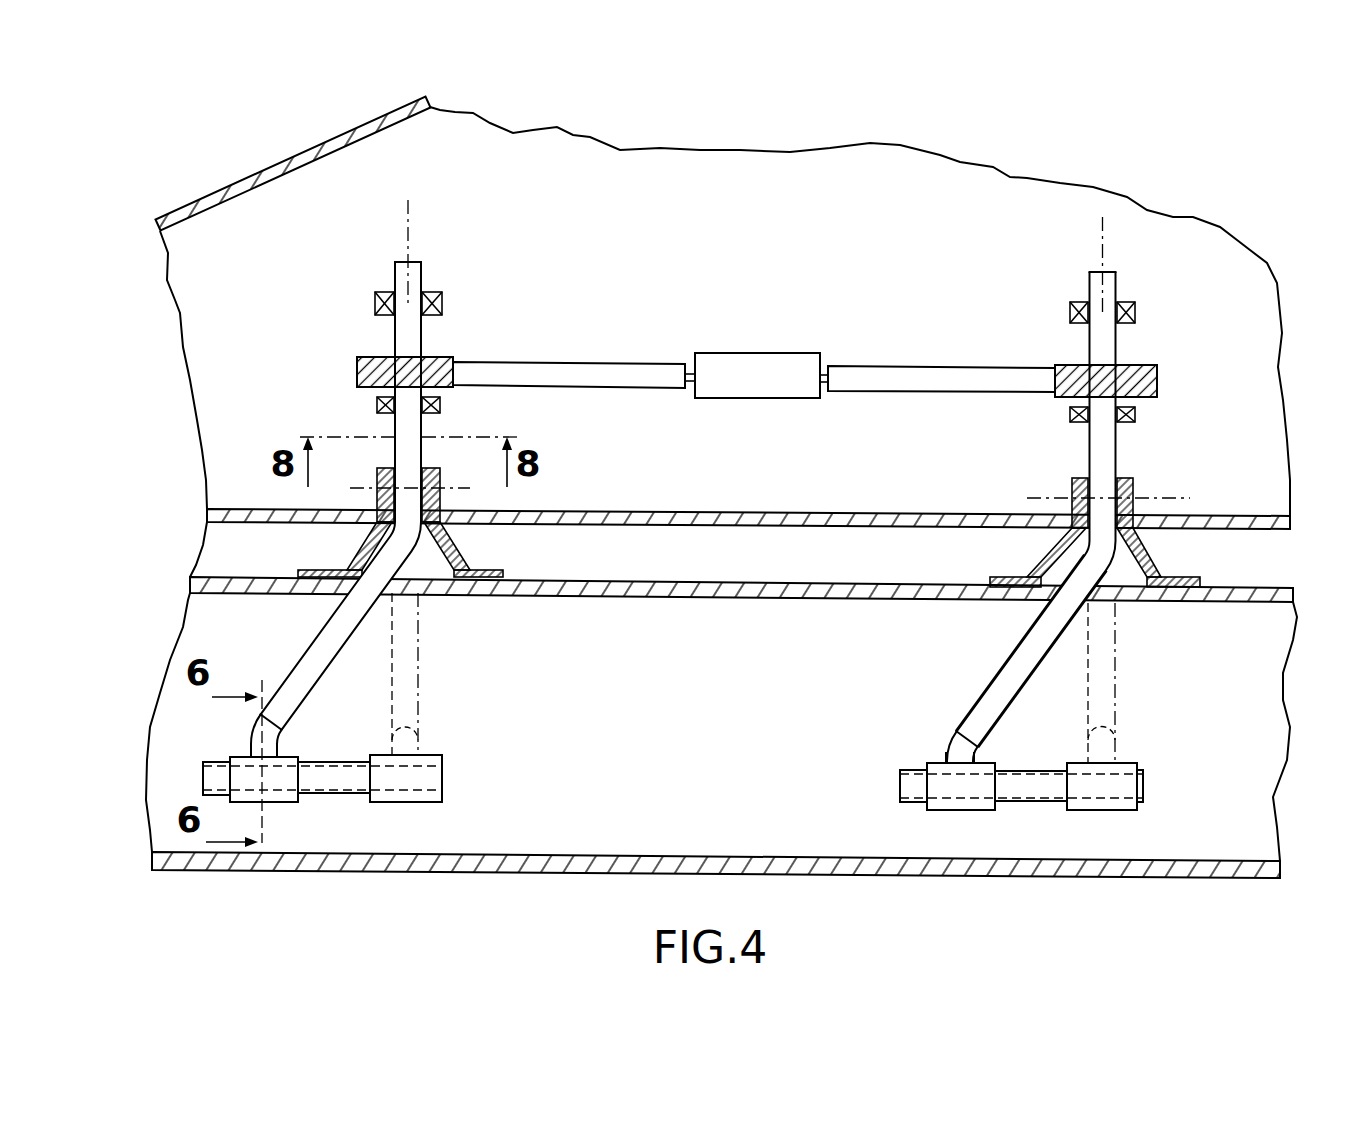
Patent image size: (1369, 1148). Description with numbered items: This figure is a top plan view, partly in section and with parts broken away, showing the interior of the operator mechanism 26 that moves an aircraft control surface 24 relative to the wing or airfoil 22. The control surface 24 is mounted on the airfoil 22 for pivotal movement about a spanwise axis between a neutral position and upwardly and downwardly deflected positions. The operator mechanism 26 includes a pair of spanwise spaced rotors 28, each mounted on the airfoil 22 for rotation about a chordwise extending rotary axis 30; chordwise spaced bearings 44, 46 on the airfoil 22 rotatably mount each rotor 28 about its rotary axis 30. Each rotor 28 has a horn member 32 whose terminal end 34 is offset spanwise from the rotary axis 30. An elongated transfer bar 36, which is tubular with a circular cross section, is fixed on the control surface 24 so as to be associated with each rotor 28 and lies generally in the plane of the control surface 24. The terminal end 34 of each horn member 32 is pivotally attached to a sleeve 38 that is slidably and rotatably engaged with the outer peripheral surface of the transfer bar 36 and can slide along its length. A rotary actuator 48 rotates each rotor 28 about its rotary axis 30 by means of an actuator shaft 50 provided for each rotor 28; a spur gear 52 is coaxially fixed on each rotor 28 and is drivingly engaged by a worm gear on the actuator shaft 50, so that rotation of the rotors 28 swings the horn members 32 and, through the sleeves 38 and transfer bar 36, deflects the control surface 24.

The airfoil 22 is at (1003, 181).
The control surface 24 is at (1274, 640).
The operator mechanism 26 is at (872, 143).
The rotor 28 is at (731, 462).
The rotary axis 30 is at (412, 230).
The horn member 32 is at (1027, 643).
The terminal end 34 is at (951, 745).
The transfer bar 36 is at (1040, 803).
The sleeve 38 is at (958, 813).
The bearing 44 is at (1137, 318).
The bearing 46 is at (1135, 414).
The rotary actuator 48 is at (760, 365).
The actuator shaft 50 is at (623, 373).
The spur gear 52 is at (362, 353).